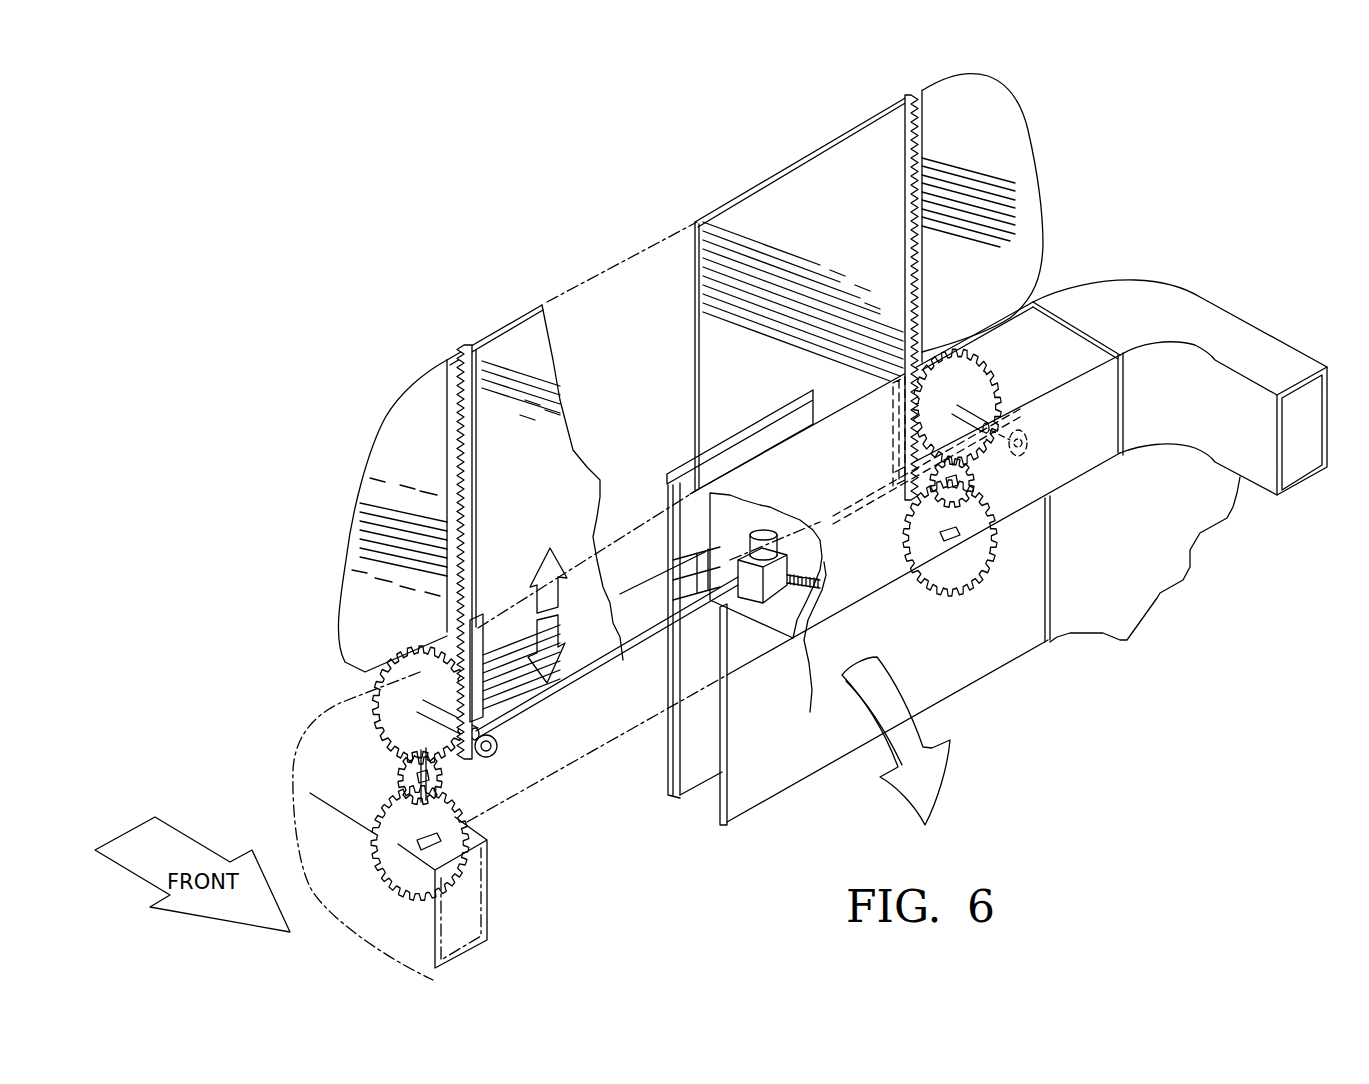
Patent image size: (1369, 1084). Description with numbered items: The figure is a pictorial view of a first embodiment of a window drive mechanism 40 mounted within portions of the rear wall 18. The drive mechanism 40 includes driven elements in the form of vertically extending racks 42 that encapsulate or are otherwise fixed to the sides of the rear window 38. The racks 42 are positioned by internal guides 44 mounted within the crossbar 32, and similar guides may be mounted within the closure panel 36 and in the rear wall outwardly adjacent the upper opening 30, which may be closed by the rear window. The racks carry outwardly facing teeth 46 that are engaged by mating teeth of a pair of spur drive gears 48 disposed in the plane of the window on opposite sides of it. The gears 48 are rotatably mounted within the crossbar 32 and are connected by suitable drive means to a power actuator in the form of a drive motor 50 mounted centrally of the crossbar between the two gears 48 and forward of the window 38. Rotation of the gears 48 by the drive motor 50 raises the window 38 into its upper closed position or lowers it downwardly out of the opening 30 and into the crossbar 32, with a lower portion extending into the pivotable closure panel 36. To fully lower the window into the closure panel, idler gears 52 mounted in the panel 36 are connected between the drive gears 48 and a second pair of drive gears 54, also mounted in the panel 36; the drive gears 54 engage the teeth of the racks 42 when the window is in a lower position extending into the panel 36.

The rear wall 18 is at (1108, 305).
The upper opening 30 is at (593, 327).
The crossbar 32 is at (1100, 443).
The closure panel 36 is at (947, 678).
The rear window 38 is at (493, 362).
The window drive mechanism 40 is at (1010, 395).
The racks 42 is at (467, 428).
The internal guides 44 is at (483, 653).
The teeth 46 is at (460, 483).
The spur drive gears 48 is at (412, 696).
The drive motor 50 is at (770, 618).
The idler gears 52 is at (410, 781).
The second pair of drive gears 54 is at (400, 873).